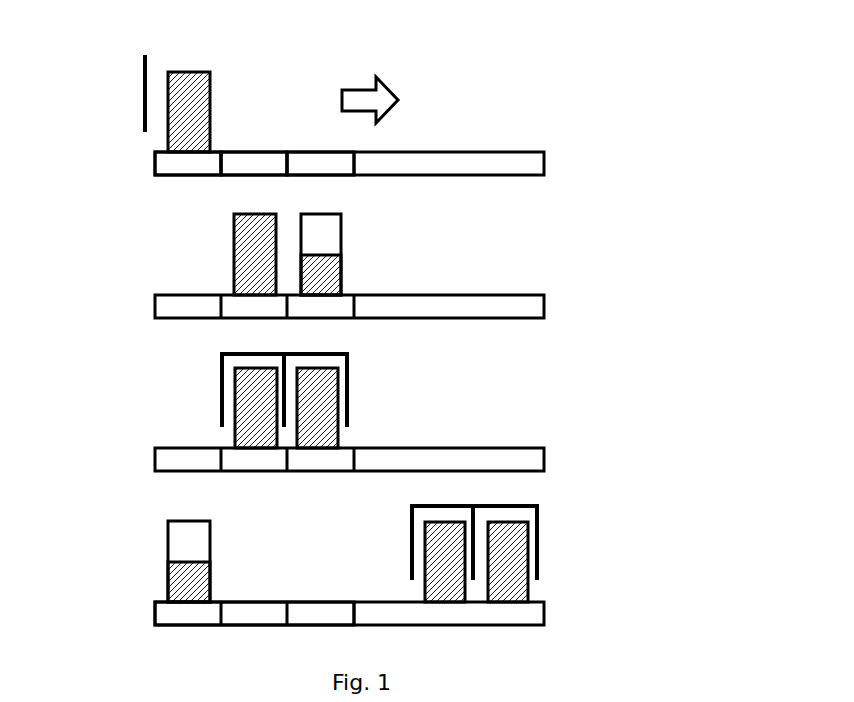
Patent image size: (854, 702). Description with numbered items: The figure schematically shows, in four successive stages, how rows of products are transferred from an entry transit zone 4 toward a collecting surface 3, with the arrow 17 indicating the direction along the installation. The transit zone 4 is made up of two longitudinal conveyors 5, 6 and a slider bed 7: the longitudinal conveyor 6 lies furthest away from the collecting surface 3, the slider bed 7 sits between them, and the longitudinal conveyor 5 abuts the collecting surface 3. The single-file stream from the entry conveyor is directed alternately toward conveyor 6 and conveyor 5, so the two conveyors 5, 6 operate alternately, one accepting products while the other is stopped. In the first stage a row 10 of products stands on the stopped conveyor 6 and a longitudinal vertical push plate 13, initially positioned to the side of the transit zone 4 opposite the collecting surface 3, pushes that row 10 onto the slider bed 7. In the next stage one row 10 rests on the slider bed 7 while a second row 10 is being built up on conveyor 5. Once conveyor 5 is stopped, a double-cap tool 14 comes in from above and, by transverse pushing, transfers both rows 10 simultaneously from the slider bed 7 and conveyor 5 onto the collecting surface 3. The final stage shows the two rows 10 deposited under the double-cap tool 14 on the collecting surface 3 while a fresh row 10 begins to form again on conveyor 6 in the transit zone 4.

The collecting surface 3 is at (466, 149).
The transit zone 4 is at (359, 625).
The longitudinal conveyor 5 is at (328, 161).
The longitudinal conveyor 6 is at (186, 162).
The slider bed 7 is at (263, 166).
The row of products 10 is at (196, 112).
The push plate 13 is at (128, 101).
The double-cap tool 14 is at (217, 388).
The conveying direction 17 is at (360, 72).